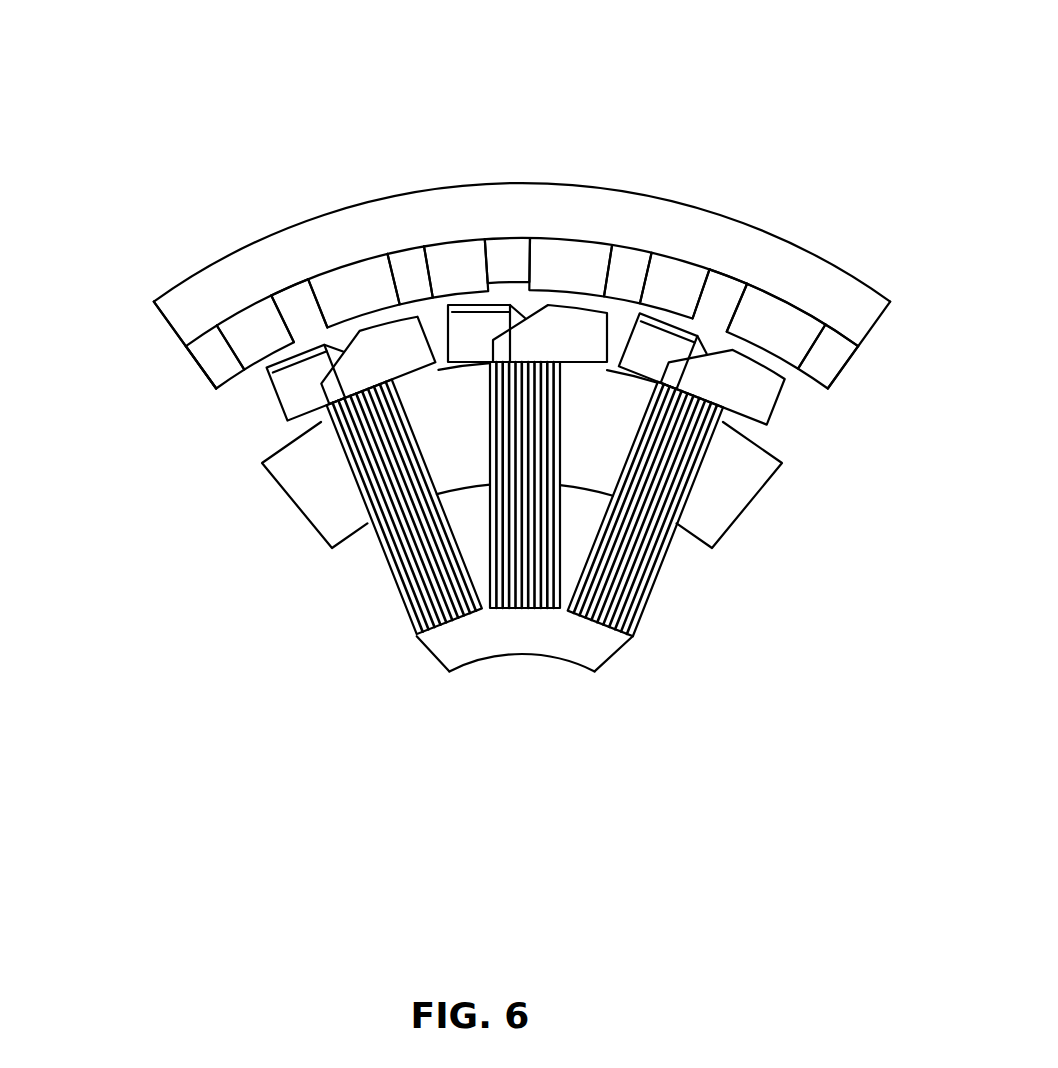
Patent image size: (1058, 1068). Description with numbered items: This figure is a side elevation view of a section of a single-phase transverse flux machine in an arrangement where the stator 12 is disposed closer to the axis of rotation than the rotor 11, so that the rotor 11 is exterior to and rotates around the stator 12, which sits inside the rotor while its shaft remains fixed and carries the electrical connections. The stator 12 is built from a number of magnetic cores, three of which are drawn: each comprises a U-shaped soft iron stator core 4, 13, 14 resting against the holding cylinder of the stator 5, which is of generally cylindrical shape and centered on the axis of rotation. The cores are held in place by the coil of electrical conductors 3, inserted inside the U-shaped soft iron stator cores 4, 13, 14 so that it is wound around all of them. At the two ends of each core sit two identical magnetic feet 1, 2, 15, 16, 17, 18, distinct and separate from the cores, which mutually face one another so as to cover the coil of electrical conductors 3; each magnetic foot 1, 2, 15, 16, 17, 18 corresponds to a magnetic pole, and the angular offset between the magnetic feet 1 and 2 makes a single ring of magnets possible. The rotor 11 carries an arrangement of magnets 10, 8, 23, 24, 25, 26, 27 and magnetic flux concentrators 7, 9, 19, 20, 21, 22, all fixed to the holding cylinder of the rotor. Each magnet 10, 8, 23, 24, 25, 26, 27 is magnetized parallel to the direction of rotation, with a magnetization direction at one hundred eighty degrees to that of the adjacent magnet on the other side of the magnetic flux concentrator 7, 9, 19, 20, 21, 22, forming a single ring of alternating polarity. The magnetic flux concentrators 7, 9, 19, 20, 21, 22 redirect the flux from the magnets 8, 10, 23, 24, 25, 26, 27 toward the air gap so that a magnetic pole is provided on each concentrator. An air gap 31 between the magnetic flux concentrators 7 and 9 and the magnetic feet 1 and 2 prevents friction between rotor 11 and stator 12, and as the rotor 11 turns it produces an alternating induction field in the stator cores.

The magnetic foot 1 is at (788, 400).
The magnetic foot 2 is at (722, 297).
The coil of electrical conductors 3 is at (743, 472).
The U-shaped soft iron stator core 4 is at (640, 547).
The holding cylinder of the stator 5 is at (605, 643).
The magnetic flux concentrator 7 is at (838, 334).
The magnet 8 is at (772, 327).
The magnetic flux concentrator 9 is at (673, 353).
The magnet 10 is at (827, 356).
The rotor 11 is at (225, 235).
The stator 12 is at (393, 596).
The U-shaped soft iron stator core 13 is at (390, 527).
The U-shaped soft iron stator core 14 is at (510, 588).
The magnetic foot 15 is at (300, 307).
The magnetic foot 16 is at (300, 398).
The magnetic foot 17 is at (513, 343).
The magnetic foot 18 is at (452, 315).
The magnetic flux concentrator 19 is at (625, 267).
The magnetic flux concentrator 20 is at (452, 260).
The magnetic flux concentrator 21 is at (367, 352).
The magnetic flux concentrator 22 is at (217, 358).
The magnet 23 is at (665, 287).
The magnet 24 is at (513, 253).
The magnet 25 is at (408, 265).
The magnet 26 is at (247, 333).
The magnet 27 is at (205, 382).
The air gap 31 is at (275, 358).